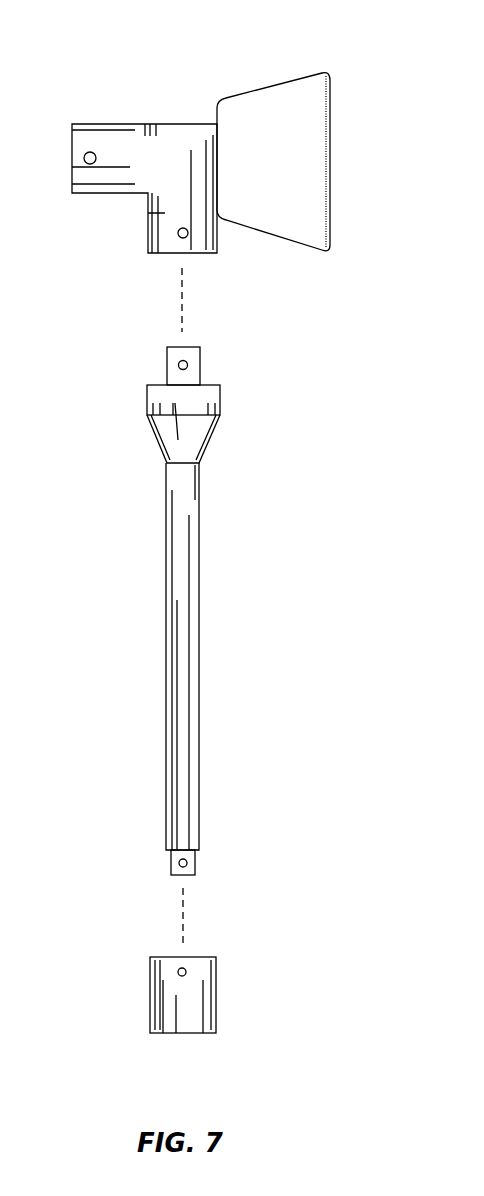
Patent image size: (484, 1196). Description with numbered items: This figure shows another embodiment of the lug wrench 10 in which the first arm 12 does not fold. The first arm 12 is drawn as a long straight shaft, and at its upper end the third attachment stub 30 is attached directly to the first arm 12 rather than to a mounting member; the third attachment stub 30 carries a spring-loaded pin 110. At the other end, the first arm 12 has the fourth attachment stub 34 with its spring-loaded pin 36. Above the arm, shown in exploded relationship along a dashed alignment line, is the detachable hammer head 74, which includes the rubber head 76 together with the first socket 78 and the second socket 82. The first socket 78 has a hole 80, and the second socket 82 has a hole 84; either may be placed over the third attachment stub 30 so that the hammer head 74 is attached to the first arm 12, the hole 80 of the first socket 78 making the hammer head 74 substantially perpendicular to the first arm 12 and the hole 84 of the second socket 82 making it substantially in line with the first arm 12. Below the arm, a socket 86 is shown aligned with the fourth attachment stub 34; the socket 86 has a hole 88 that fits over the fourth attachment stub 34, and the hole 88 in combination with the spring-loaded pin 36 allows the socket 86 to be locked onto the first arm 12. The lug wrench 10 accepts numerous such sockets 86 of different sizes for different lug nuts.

The lug wrench 10 is at (292, 507).
The first arm 12 is at (183, 613).
The third attachment stub 30 is at (192, 376).
The fourth attachment stub 34 is at (188, 877).
The spring-loaded pin 36 is at (190, 862).
The detachable hammer head 74 is at (182, 56).
The rubber head 76 is at (313, 138).
The first socket 78 is at (127, 140).
The hole 80 is at (89, 164).
The second socket 82 is at (165, 213).
The hole 84 is at (186, 238).
The socket 86 is at (190, 1000).
The hole 88 is at (185, 968).
The spring-loaded pin 110 is at (174, 363).